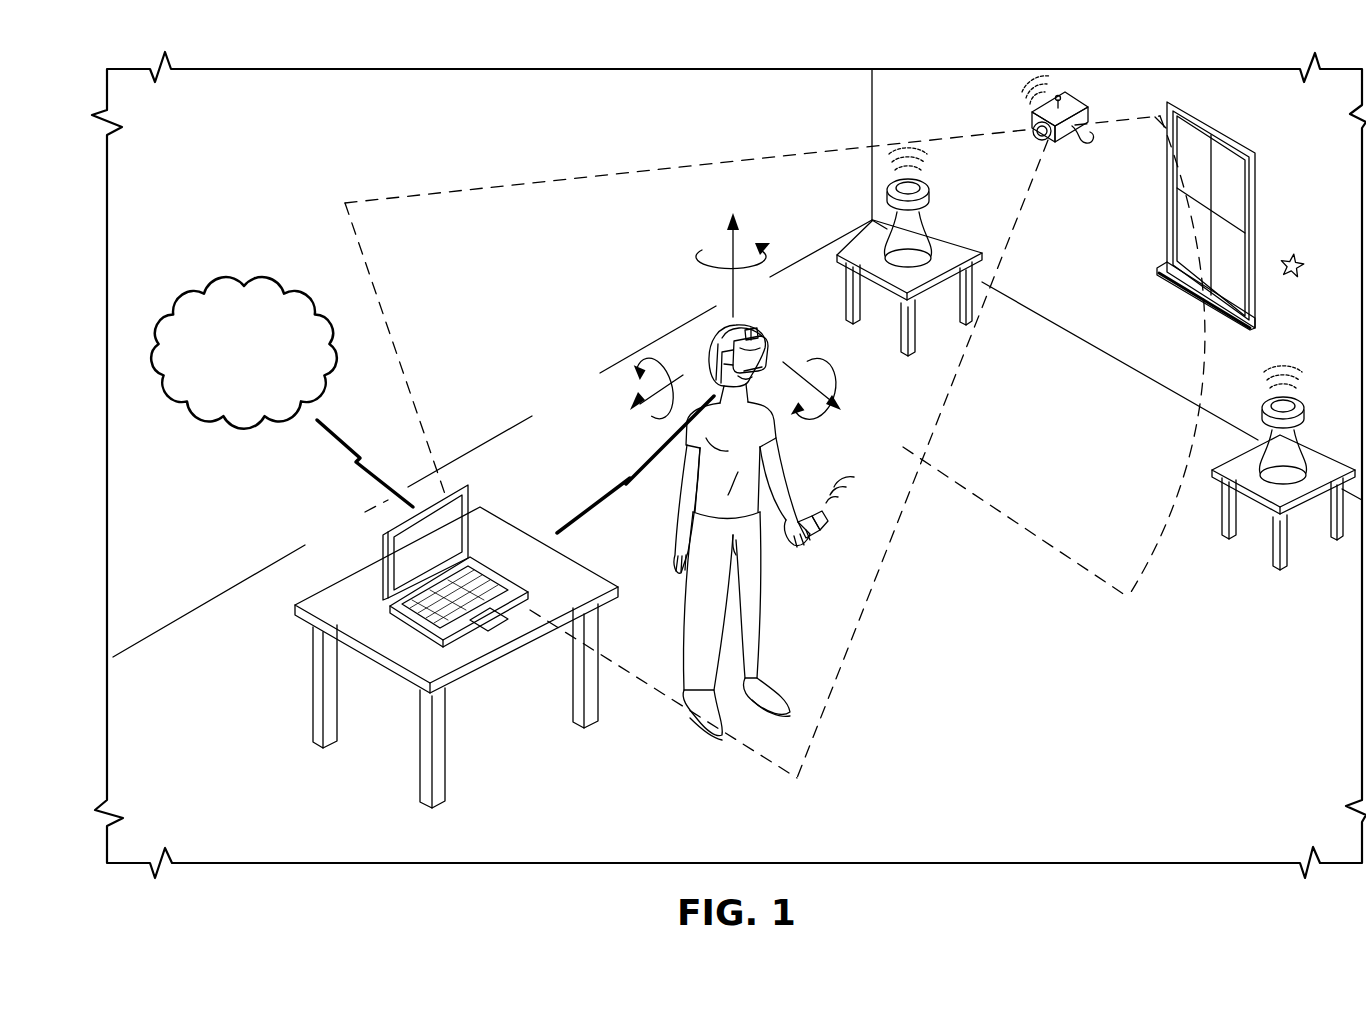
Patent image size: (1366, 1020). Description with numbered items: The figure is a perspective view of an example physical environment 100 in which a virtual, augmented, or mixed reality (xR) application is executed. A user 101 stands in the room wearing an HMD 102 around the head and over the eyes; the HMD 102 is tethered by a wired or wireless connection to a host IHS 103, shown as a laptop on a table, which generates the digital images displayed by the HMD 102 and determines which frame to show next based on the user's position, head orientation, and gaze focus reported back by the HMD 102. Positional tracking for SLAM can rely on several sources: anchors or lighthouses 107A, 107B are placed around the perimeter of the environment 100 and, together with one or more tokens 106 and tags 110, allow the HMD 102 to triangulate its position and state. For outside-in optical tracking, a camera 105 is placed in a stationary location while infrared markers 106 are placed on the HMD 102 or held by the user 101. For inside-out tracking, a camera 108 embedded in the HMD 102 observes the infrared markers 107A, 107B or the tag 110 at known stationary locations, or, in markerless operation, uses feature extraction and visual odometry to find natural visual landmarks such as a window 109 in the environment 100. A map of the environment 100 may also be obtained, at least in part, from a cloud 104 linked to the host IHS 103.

The physical environment 100 is at (566, 66).
The user 101 is at (767, 587).
The HMD 102 is at (722, 343).
The host IHS 103 is at (387, 548).
The cloud 104 is at (266, 391).
The camera 105 is at (1090, 106).
The tokens / infrared markers 106 is at (820, 535).
The anchor / lighthouse 107A is at (931, 192).
The anchor / lighthouse 107B is at (1302, 410).
The camera 108 is at (754, 330).
The window 109 is at (1257, 200).
The tag 110 is at (1301, 262).